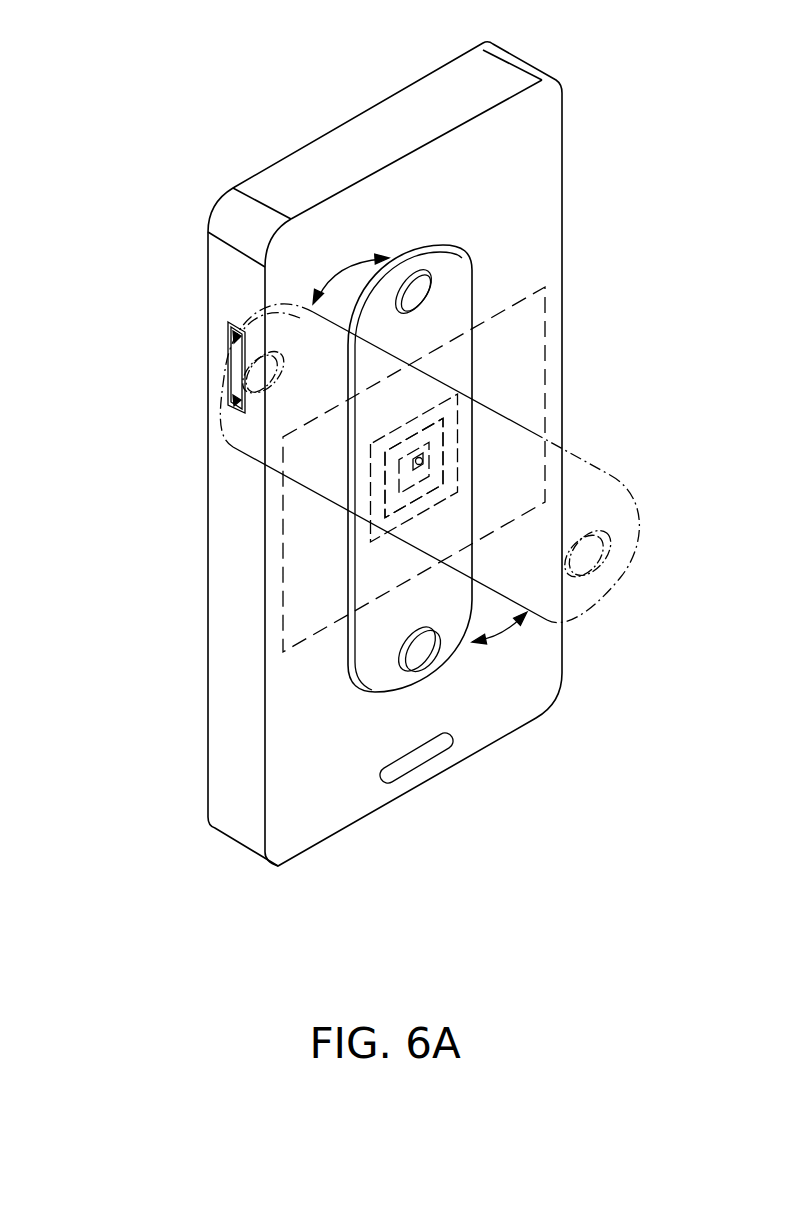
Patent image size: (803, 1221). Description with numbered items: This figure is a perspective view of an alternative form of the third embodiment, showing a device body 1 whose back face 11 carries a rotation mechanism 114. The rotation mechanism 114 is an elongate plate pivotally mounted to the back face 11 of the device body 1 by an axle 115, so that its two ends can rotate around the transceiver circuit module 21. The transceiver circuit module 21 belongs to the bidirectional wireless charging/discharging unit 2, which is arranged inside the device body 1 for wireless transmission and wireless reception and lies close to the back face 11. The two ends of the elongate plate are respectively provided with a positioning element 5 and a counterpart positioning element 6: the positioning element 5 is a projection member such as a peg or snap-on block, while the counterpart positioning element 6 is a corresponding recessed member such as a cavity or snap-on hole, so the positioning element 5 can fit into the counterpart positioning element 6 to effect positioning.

The device body 1 is at (208, 752).
The back face 11 is at (480, 703).
The rotation mechanism 114 is at (473, 255).
The axle 115 is at (422, 458).
The counterpart positioning element 6 is at (422, 292).
The positioning element 5 is at (440, 650).
The bidirectional wireless charging/discharging unit 2 is at (545, 320).
The transceiver circuit module 21 is at (458, 460).